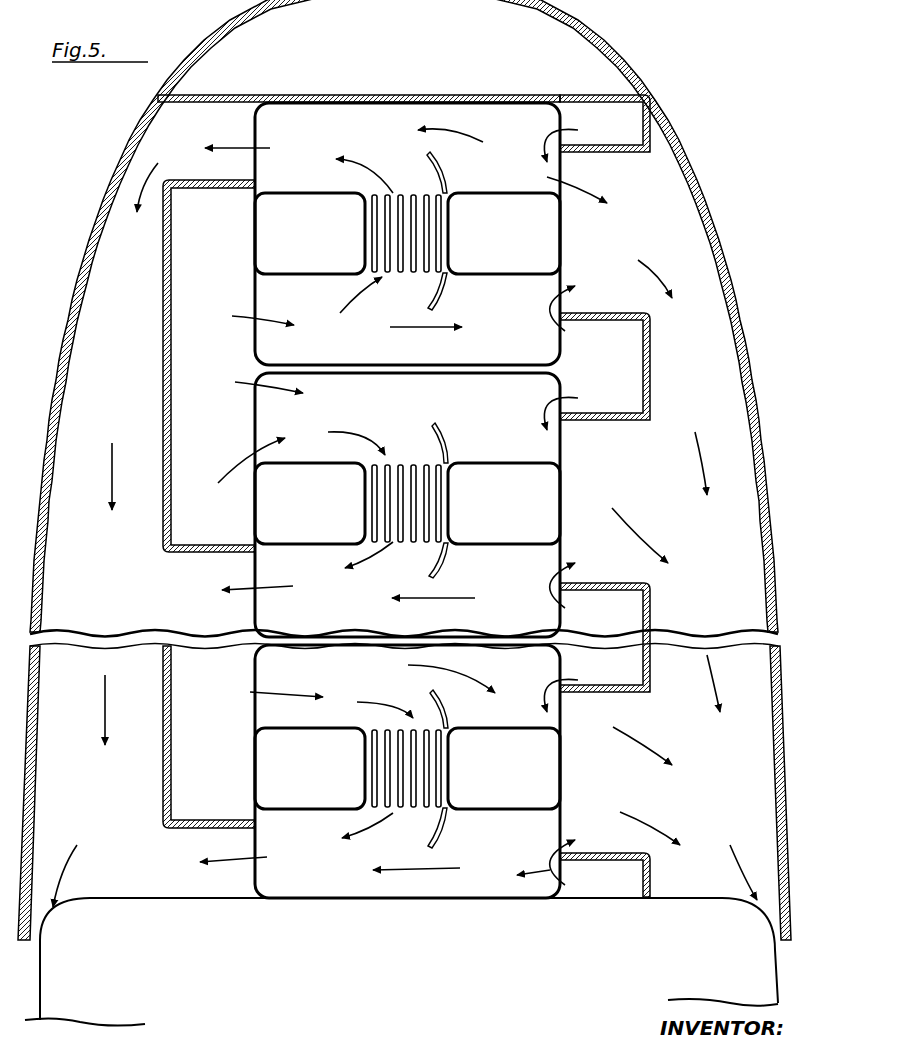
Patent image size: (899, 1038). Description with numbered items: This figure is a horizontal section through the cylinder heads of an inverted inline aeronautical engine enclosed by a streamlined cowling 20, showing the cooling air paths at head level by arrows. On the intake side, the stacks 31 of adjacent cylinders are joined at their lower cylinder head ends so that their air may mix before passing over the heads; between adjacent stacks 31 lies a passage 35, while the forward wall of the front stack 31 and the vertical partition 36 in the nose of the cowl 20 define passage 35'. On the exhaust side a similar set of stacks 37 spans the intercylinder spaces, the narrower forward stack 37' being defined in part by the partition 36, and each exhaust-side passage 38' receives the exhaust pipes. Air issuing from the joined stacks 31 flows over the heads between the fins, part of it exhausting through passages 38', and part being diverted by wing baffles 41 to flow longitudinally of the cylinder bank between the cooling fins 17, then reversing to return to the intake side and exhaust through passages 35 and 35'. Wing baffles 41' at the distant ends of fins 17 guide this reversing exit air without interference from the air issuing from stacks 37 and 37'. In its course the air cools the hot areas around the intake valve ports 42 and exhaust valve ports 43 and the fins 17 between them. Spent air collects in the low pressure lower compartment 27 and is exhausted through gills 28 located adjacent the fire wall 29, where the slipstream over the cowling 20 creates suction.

The cowling 20 is at (722, 225).
The lower compartment 27 is at (100, 365).
The gills 28 is at (38, 935).
The fire wall 29 is at (148, 910).
The stack 31 is at (192, 313).
The passage 35 is at (207, 453).
The passage 35' is at (184, 157).
The vertical partition 36 is at (368, 96).
The stack 37 is at (632, 502).
The forward stack 37' is at (641, 123).
The passage 38' is at (652, 522).
The wing baffle 41 is at (465, 440).
The wing baffle 41' is at (468, 504).
The intake valve port 42 is at (280, 240).
The exhaust valve port 43 is at (545, 243).
The cooling fins 17 is at (428, 276).